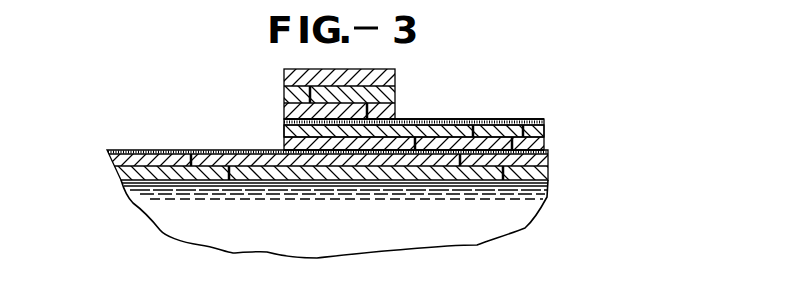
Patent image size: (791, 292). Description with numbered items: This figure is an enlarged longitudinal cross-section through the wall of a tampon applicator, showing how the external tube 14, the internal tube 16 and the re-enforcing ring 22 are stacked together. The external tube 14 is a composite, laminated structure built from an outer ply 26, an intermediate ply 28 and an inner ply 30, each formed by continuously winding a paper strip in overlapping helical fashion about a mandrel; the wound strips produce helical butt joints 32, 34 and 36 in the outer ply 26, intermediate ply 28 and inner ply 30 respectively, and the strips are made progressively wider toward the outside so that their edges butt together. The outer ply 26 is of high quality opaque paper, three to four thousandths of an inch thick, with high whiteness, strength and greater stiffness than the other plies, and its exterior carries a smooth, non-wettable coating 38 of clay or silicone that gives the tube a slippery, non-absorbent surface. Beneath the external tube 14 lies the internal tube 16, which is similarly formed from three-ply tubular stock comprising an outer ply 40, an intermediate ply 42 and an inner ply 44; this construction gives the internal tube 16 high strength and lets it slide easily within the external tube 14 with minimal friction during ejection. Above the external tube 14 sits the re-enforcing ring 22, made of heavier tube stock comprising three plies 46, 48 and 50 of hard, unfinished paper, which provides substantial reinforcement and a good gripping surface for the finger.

The external tube 14 is at (515, 119).
The internal tube 16 is at (479, 181).
The re-enforcing ring 22 is at (297, 69).
The outer ply 26 is at (284, 123).
The intermediate ply 28 is at (284, 135).
The inner ply 30 is at (284, 145).
The helical butt joint 32 is at (431, 119).
The helical butt joint 34 is at (488, 103).
The helical butt joint 36 is at (545, 139).
The non-wettable coating 38 is at (463, 119).
The outer ply 40 is at (545, 150).
The intermediate ply 42 is at (549, 162).
The inner ply 44 is at (549, 172).
The ply 46 is at (396, 77).
The ply 48 is at (397, 93).
The ply 50 is at (398, 110).